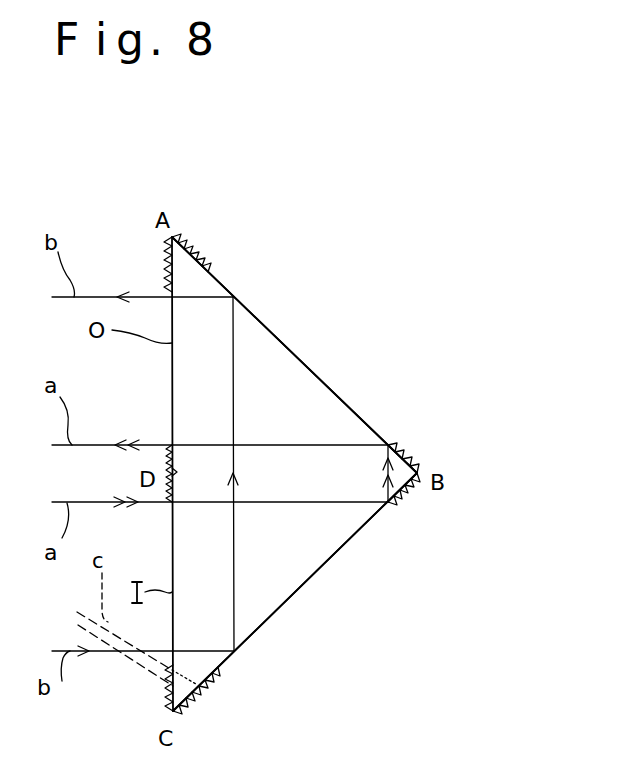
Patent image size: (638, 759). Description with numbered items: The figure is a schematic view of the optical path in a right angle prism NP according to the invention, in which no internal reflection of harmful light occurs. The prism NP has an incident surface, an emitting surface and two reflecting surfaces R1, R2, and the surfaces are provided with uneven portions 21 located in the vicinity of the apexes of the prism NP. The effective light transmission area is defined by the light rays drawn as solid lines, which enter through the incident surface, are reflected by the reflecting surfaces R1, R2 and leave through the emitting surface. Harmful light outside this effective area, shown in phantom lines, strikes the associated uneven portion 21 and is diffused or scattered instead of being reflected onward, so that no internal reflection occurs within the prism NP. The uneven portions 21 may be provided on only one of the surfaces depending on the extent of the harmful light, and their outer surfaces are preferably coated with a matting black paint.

The uneven portion 21 is at (167, 262).
The reflecting surface R1 is at (317, 573).
The reflecting surface R2 is at (332, 388).
The right angle prism NP is at (428, 428).